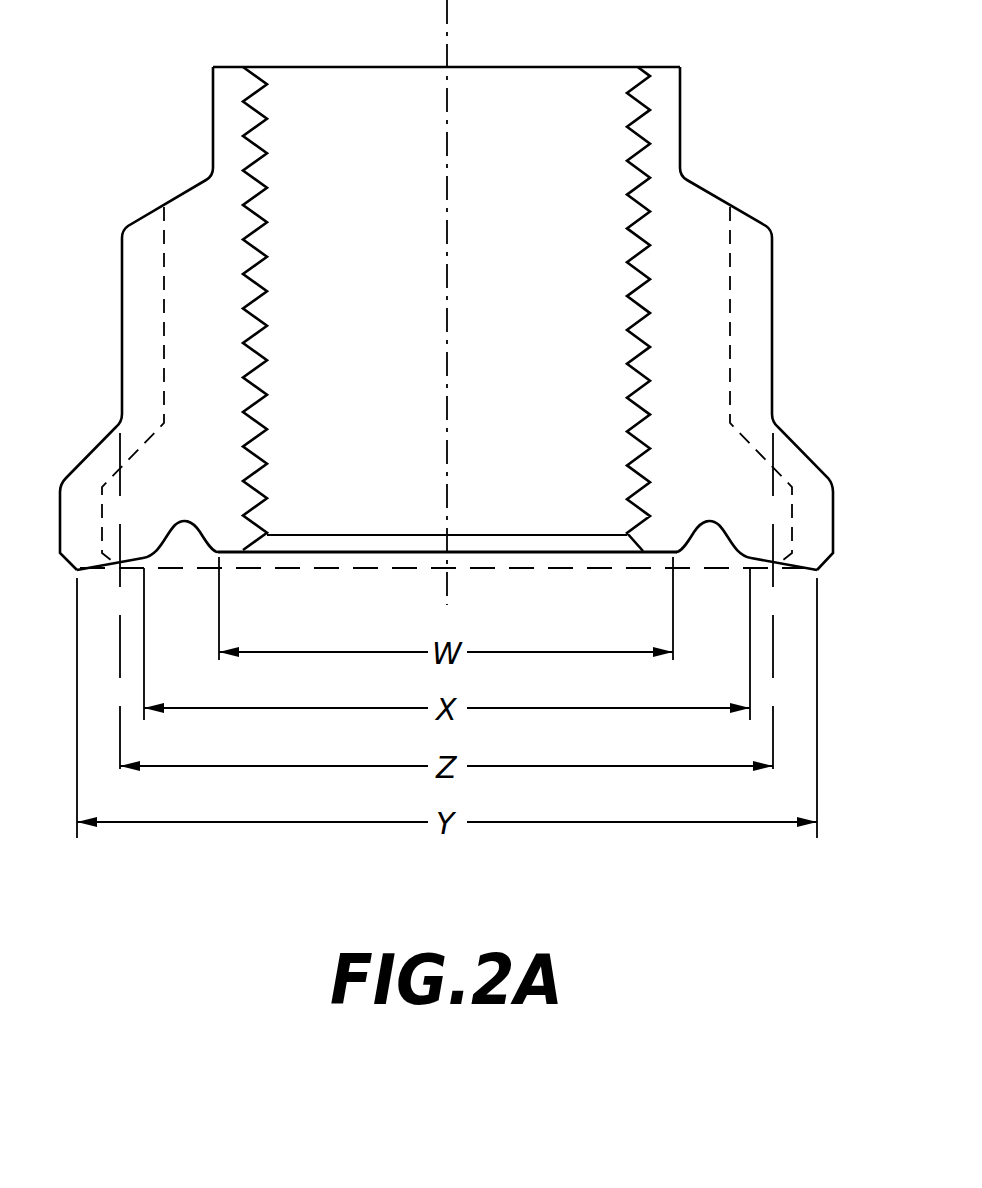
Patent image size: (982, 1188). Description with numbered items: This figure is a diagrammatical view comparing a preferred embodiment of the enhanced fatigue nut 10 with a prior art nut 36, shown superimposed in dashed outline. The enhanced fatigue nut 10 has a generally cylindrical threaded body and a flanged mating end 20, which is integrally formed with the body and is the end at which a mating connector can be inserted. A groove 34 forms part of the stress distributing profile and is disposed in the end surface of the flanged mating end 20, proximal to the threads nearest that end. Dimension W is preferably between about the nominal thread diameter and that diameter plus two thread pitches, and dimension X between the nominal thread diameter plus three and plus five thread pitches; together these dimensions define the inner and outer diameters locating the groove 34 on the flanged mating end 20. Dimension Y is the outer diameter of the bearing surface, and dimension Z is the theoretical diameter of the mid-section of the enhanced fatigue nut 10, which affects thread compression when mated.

The enhanced fatigue nut 10 is at (713, 200).
The flanged mating end 20 is at (813, 522).
The groove 34 is at (733, 540).
The prior art nut 36 is at (160, 250).